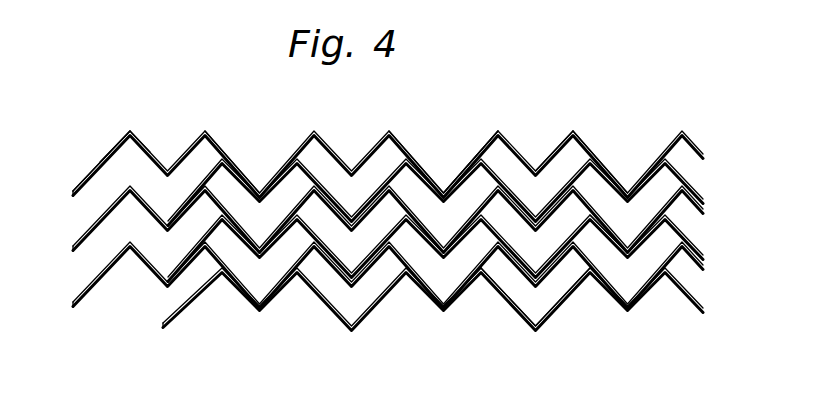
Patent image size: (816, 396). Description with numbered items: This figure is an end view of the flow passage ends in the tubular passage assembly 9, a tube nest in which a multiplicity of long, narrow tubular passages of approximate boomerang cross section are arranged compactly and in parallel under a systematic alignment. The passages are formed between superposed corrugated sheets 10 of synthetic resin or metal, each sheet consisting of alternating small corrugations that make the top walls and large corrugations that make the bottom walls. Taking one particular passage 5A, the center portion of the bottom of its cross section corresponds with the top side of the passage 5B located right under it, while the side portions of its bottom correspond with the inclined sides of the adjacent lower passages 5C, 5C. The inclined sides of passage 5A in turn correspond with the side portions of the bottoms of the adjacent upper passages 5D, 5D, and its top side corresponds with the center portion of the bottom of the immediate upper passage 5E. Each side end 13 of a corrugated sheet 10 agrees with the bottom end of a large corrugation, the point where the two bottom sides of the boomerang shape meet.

The side end 13 is at (71, 184).
The corrugated sheet 10 is at (134, 134).
The tubular passage assembly 9 is at (223, 147).
The passage 5A is at (503, 216).
The passage 5B is at (536, 297).
The adjacent lower passages 5C is at (452, 273).
The adjacent upper passages 5D is at (461, 190).
The immediate upper passage 5E is at (567, 160).